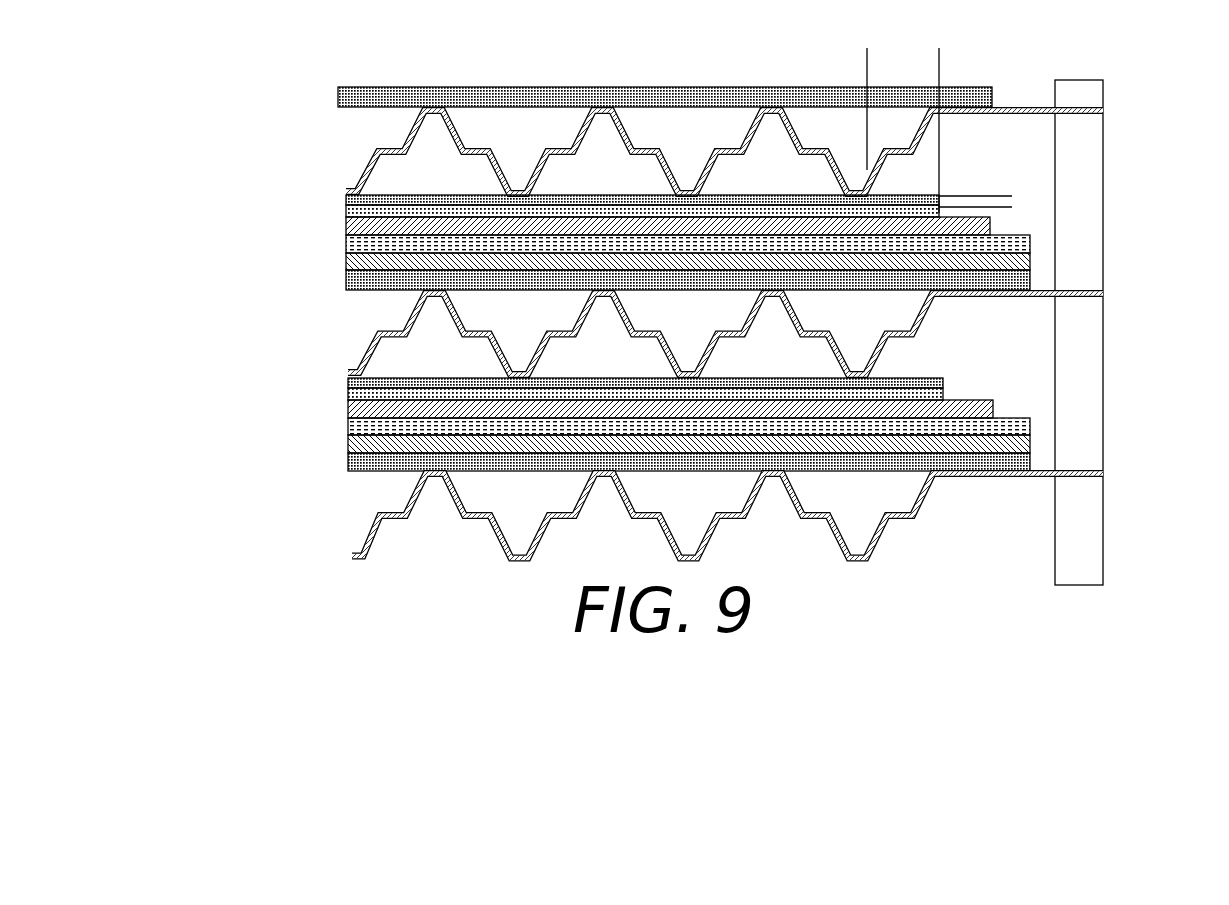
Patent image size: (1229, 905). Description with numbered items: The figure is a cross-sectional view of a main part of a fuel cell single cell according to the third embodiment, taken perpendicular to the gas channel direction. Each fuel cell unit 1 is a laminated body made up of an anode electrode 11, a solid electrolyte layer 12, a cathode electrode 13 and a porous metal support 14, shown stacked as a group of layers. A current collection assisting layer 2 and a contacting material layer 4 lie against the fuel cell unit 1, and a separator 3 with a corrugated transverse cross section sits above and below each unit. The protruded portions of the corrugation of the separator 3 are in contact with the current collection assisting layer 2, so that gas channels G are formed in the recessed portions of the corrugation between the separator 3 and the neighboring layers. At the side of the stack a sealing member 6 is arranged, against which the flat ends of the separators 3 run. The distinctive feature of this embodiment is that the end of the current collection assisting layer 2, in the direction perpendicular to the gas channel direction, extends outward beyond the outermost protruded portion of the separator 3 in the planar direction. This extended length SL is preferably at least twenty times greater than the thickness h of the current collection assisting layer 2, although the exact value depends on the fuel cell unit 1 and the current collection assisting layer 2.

The fuel cell unit 1 is at (610, 454).
The current collection assisting layer 2 is at (348, 203).
The separator 3 is at (374, 160).
The contacting material layer 4 is at (348, 217).
The sealing member 6 is at (1086, 380).
The anode electrode 11 is at (350, 447).
The solid electrolyte layer 12 is at (350, 429).
The cathode electrode 13 is at (350, 413).
The porous metal support 14 is at (646, 492).
The gas channel G is at (437, 148).
The extended length SL is at (939, 62).
The thickness h is at (1008, 176).